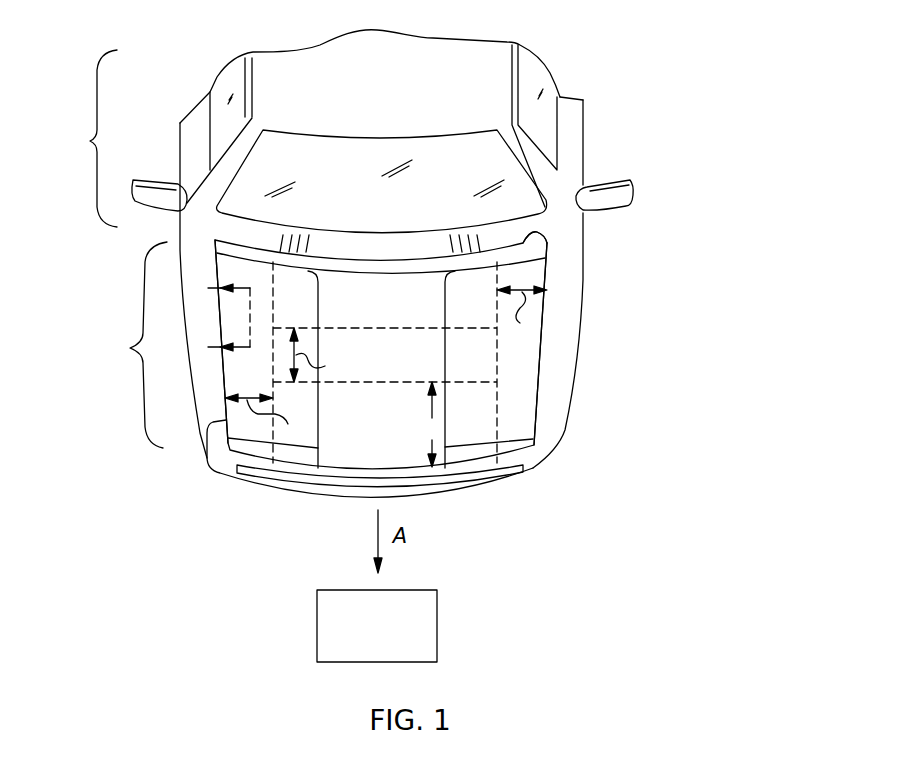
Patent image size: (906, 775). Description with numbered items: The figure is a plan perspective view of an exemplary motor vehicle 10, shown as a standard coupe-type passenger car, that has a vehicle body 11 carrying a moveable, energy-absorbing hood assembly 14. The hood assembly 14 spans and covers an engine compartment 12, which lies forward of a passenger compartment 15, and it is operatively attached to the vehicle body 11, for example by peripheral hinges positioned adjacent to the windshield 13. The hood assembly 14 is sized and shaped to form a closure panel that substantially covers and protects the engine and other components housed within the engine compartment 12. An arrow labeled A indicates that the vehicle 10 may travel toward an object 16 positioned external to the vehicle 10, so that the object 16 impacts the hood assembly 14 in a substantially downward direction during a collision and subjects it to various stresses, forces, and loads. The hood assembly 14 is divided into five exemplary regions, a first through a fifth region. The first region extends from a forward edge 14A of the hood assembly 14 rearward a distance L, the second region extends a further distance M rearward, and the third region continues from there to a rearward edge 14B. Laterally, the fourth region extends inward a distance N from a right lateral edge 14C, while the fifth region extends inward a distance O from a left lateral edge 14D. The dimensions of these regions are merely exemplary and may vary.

The motor vehicle 10 is at (676, 169).
The vehicle body 11 is at (283, 77).
The engine compartment 12 is at (131, 345).
The windshield 13 is at (468, 160).
The hood assembly 14 is at (556, 346).
The forward edge of the hood assembly 14A is at (478, 467).
The rearward edge of the hood assembly 14B is at (545, 237).
The right lateral edge of the hood assembly 14C is at (540, 412).
The left lateral edge of the hood assembly 14D is at (208, 460).
The passenger compartment 15 is at (82, 138).
The object 16 is at (317, 627).